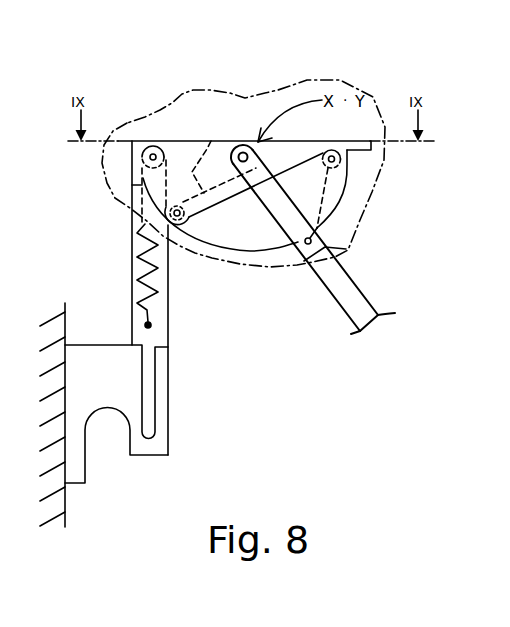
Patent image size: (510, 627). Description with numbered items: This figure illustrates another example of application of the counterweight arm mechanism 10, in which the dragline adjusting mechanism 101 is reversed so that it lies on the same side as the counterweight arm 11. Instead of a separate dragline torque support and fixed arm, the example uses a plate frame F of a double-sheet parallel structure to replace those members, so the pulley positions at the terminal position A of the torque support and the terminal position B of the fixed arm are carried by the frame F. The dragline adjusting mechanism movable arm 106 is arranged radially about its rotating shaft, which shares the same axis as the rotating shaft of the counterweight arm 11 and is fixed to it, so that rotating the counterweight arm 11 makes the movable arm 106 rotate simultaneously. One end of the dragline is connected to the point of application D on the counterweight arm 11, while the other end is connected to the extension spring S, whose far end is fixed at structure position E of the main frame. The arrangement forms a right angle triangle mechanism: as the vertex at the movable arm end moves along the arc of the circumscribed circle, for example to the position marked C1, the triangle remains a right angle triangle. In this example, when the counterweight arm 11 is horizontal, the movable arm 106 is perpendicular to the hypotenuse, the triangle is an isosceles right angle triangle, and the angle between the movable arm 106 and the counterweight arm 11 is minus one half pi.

The counterweight arm mechanism 10 is at (235, 82).
The dragline adjusting mechanism 101 is at (168, 102).
The dragline adjusting mechanism movable arm 106 is at (211, 141).
The counterweight arm 11 is at (323, 292).
The terminal position of the dragline torque support A is at (341, 189).
The terminal position of the dragline adjusting mechanism fixed arm B is at (139, 157).
The position of vertex C C1 is at (195, 225).
The point of application D is at (325, 244).
The structure position E is at (156, 328).
The frame F is at (251, 245).
The extension spring S is at (129, 263).